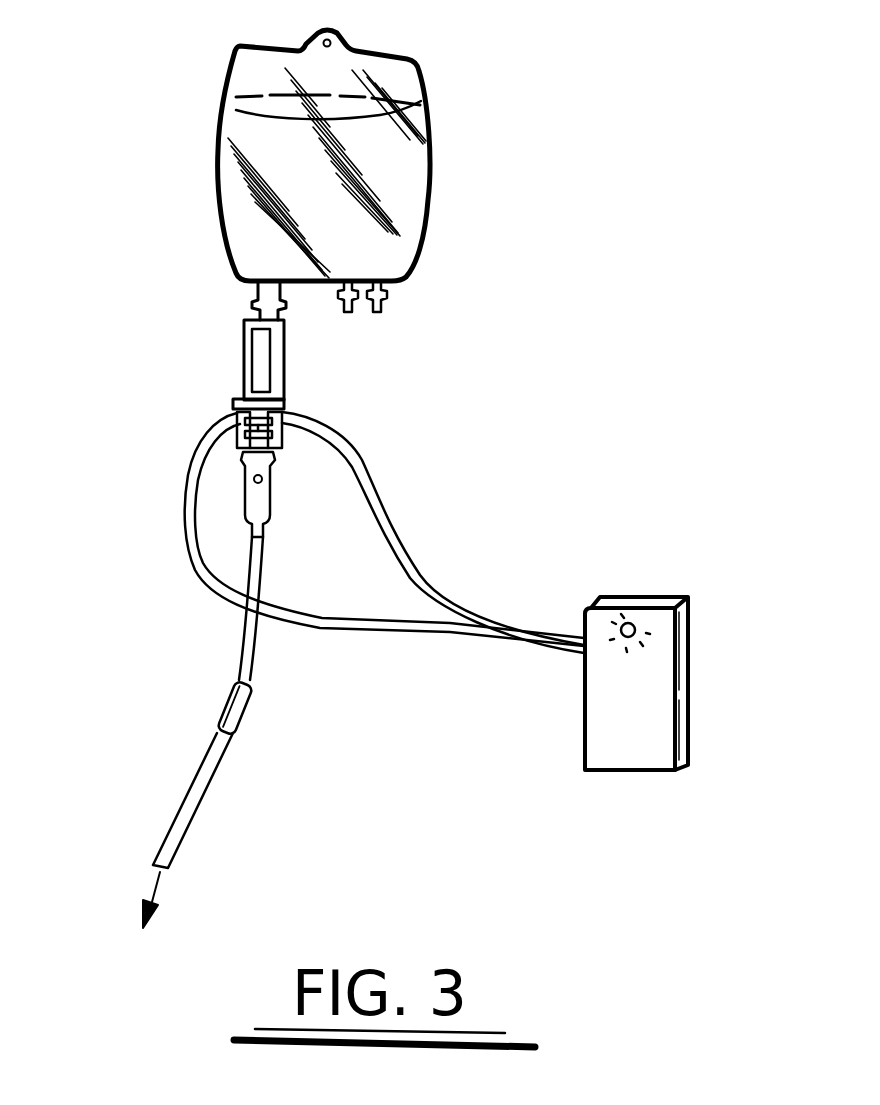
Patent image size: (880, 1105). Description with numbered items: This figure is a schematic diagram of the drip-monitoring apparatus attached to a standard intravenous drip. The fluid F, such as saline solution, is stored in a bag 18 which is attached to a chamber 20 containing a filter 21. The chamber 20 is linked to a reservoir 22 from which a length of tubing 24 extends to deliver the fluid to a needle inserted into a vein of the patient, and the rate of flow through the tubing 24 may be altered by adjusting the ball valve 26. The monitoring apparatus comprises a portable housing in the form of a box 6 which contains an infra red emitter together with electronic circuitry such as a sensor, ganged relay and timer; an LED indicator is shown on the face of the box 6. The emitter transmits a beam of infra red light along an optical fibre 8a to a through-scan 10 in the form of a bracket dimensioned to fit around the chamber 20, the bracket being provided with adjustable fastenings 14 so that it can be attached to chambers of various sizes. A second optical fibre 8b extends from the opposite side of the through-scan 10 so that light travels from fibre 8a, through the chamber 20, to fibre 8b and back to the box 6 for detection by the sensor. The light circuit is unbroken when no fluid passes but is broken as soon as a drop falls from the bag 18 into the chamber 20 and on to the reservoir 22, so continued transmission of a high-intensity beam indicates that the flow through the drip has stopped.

The bag 18 is at (432, 178).
The fluid F is at (366, 174).
The chamber 20 is at (237, 352).
The filter 21 is at (271, 353).
The through-scan 10 is at (281, 413).
The reservoir 22 is at (264, 481).
The adjustable fastenings 14 is at (327, 529).
The optical fibre 8a is at (443, 634).
The second optical fibre 8b is at (392, 541).
The tubing 24 is at (198, 790).
The ball valve 26 is at (255, 690).
The box 6 is at (676, 665).
The light emitting diode indicator LED is at (680, 586).